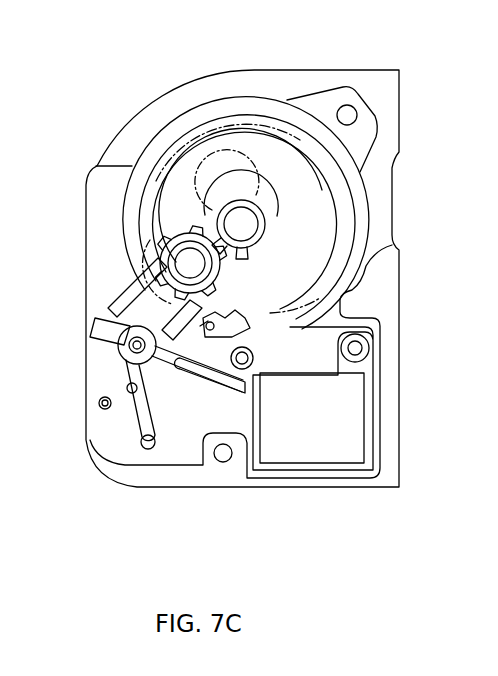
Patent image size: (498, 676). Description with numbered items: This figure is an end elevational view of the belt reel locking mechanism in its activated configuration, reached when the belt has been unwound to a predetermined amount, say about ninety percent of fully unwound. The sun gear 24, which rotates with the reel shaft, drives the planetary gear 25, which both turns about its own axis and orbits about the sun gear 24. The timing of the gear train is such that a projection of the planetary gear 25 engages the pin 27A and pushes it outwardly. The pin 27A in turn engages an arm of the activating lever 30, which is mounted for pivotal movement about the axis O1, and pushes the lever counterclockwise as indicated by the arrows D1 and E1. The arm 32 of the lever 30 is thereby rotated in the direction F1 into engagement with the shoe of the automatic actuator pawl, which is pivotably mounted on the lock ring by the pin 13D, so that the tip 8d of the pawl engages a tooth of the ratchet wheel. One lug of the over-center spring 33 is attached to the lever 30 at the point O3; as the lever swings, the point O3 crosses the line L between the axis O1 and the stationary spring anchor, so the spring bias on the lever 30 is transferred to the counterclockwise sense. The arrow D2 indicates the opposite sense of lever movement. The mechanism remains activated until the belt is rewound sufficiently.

The sun gear 24 is at (266, 243).
The tip of the pawl 8d is at (208, 321).
The pin 27A is at (110, 312).
The activating lever 30 is at (118, 322).
The axis O1 is at (128, 345).
The arrow D1 is at (90, 394).
The direction D2 is at (120, 380).
The line L is at (98, 415).
The over-center spring 33 is at (128, 395).
The point O3 is at (109, 409).
The arm of the lever 32 is at (222, 380).
The planetary gear 25 is at (244, 324).
The pin 13D is at (257, 378).
The arrow E1 is at (185, 388).
The force direction F1 is at (218, 383).